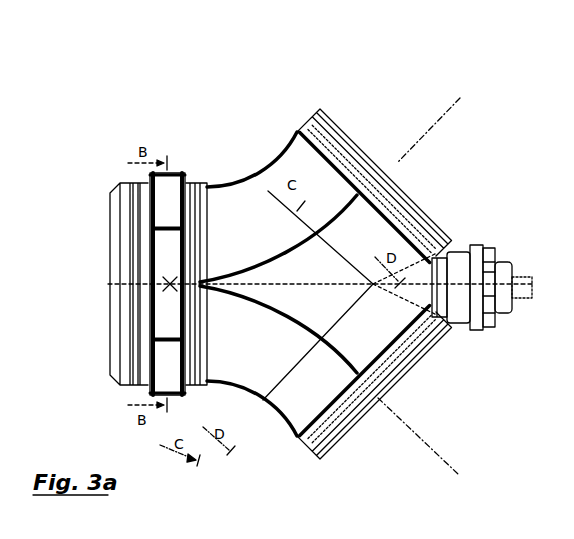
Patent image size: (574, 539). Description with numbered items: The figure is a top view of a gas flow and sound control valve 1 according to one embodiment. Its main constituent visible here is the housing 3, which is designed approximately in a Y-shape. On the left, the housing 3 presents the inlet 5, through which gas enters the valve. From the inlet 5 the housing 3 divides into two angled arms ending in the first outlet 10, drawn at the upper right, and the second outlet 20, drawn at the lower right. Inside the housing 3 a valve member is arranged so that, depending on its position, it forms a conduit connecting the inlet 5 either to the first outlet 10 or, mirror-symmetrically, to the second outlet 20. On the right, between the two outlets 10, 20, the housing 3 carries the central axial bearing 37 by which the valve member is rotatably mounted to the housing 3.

The gas flow and sound control valve 1 is at (107, 161).
The housing 3 is at (258, 224).
The inlet 5 is at (110, 309).
The first outlet 10 is at (364, 146).
The second outlet 20 is at (350, 430).
The central axial bearing 37 is at (457, 267).